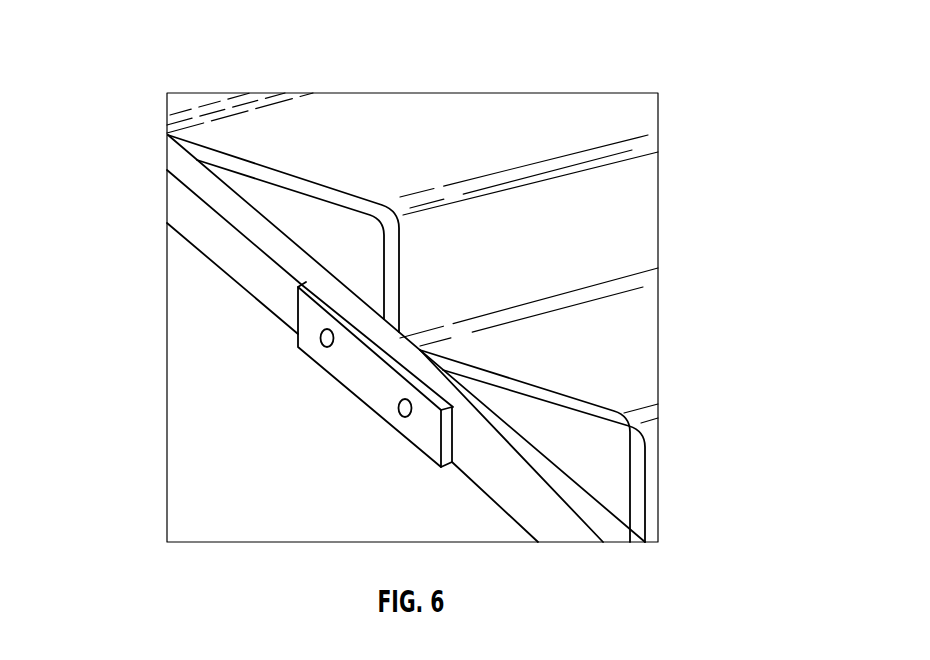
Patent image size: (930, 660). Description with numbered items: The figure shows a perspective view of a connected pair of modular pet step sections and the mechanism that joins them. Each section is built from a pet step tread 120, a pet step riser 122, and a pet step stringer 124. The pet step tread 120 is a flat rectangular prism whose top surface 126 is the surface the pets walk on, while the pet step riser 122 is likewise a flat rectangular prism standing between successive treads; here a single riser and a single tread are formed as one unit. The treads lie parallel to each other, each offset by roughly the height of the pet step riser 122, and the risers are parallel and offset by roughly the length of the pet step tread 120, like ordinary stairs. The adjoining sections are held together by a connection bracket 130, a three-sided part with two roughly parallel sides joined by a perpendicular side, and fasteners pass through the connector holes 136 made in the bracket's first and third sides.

The pet step tread 120 is at (285, 182).
The pet step riser 122 is at (597, 240).
The pet step stringer 124 is at (212, 263).
The top surface 126 is at (498, 133).
The connection bracket 130 is at (298, 313).
The connector hole 136 is at (398, 408).